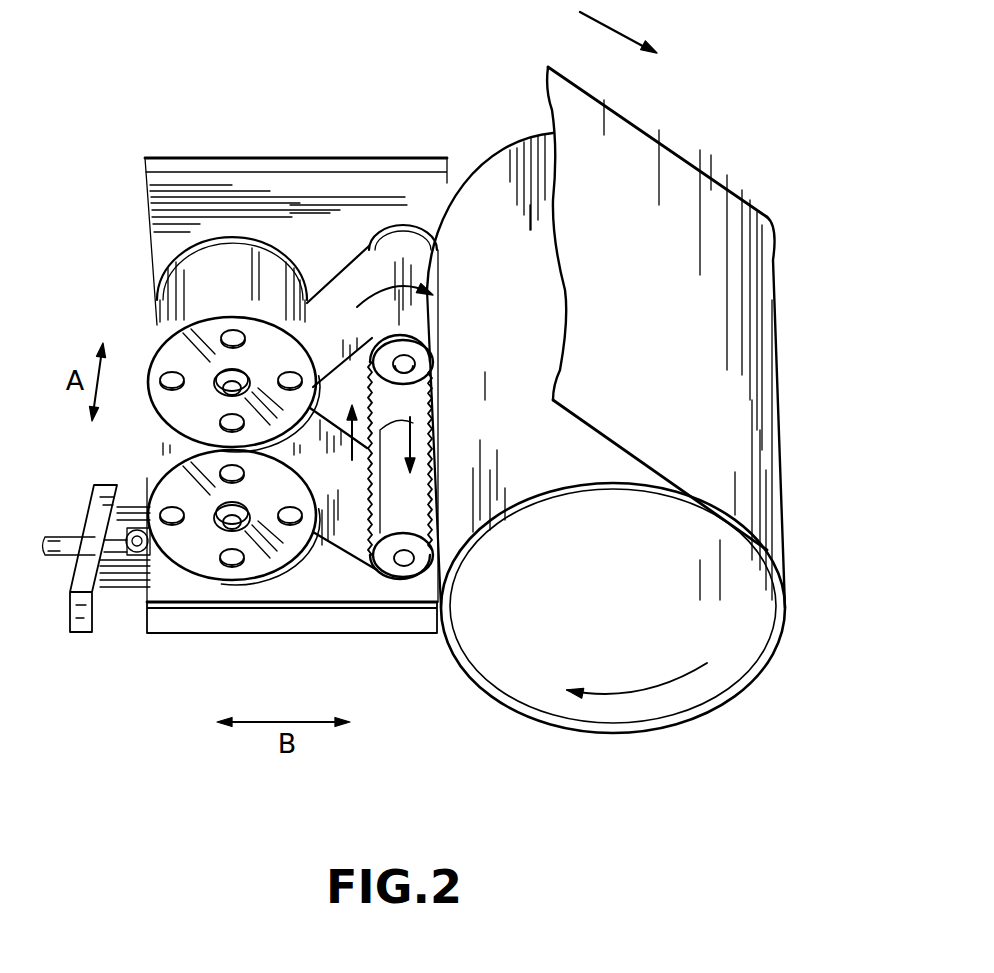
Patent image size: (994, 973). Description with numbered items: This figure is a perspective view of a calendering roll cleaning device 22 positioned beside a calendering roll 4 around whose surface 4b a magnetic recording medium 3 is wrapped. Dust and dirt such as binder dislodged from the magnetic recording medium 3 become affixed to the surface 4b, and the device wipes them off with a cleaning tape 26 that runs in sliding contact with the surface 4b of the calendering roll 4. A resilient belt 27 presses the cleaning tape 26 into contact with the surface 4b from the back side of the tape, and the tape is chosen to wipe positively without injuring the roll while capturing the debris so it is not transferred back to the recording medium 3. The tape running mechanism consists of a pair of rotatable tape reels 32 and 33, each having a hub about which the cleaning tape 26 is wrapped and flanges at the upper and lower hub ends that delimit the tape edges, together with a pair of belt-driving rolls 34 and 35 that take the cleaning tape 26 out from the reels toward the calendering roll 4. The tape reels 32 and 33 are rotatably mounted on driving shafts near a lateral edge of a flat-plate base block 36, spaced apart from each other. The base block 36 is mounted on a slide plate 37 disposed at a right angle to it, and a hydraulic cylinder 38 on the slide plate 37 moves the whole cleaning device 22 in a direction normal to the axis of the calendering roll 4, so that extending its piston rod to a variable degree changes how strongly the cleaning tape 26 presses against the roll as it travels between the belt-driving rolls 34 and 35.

The magnetic recording medium 3 is at (673, 157).
The calendering roll 4 is at (702, 643).
The surface of the calendering roll 4b is at (613, 463).
The calendering roll cleaning device 22 is at (118, 255).
The cleaning tape 26 is at (340, 283).
The resilient belt 27 is at (357, 533).
The tape reel 32 is at (150, 373).
The tape reel 33 is at (198, 543).
The belt-driving roll 34 is at (415, 353).
The belt-driving roll 35 is at (423, 562).
The base block 36 is at (200, 190).
The slide plate 37 is at (278, 590).
The hydraulic cylinder 38 is at (117, 542).